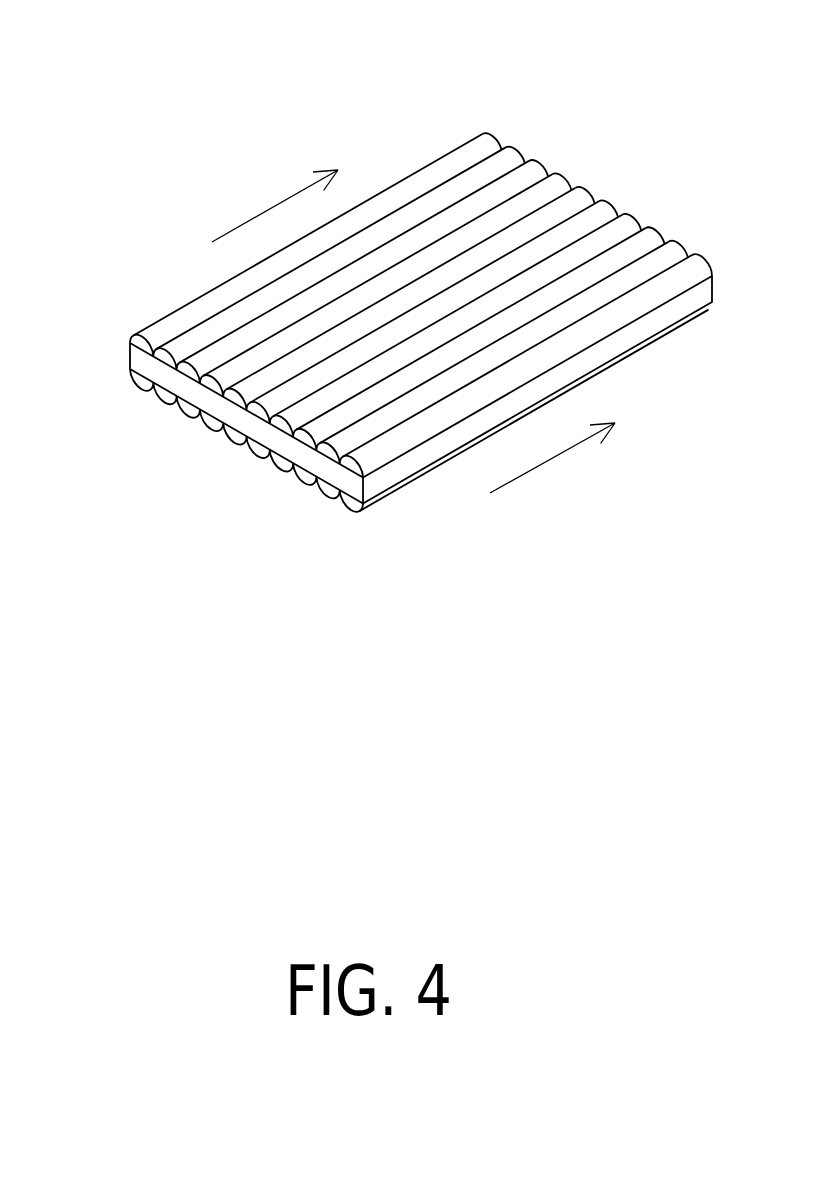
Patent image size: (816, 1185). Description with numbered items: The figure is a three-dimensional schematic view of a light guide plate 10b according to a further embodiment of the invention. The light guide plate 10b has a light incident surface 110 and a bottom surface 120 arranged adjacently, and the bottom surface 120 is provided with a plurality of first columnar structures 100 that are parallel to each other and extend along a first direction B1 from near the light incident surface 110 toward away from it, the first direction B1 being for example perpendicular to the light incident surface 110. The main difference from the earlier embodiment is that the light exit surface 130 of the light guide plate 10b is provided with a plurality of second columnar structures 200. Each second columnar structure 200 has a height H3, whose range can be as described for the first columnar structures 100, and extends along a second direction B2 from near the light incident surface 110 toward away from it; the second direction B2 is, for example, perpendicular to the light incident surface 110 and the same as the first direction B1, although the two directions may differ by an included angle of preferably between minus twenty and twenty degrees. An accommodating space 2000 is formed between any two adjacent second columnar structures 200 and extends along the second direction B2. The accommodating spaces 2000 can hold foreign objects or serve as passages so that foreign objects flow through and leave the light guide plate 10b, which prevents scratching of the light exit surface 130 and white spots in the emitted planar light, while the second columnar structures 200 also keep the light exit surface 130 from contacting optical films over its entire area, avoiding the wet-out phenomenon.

The light guide plate 10b is at (97, 44).
The first columnar structures 100 is at (138, 386).
The light incident surface 110 is at (244, 429).
The bottom surface 120 is at (130, 372).
The light exit surface 130 is at (131, 339).
The second columnar structures 200 is at (358, 217).
The accommodating space 2000 is at (654, 247).
The height H3 is at (353, 456).
The first direction B1 is at (552, 460).
The second direction B2 is at (275, 206).